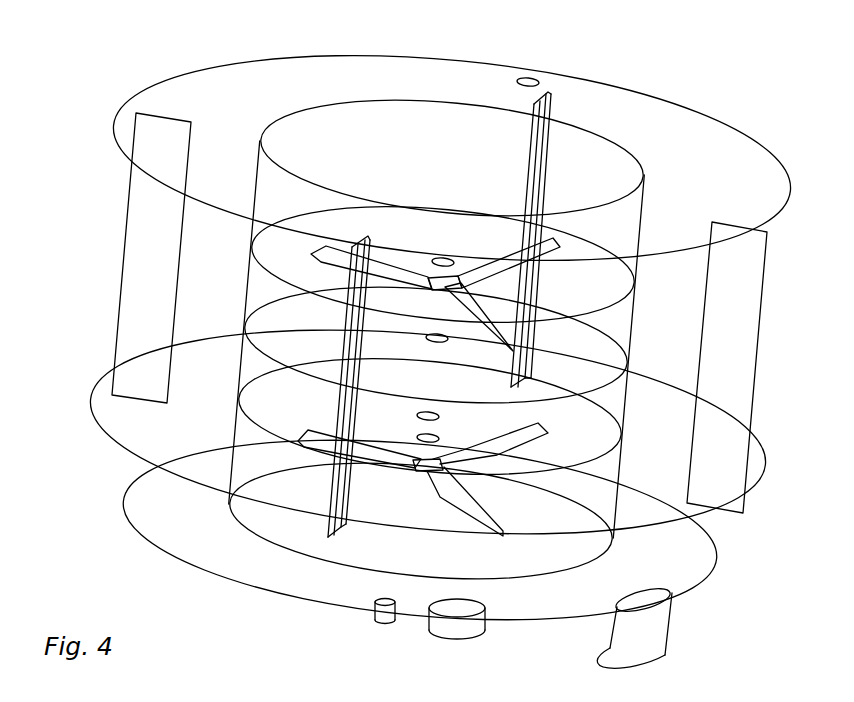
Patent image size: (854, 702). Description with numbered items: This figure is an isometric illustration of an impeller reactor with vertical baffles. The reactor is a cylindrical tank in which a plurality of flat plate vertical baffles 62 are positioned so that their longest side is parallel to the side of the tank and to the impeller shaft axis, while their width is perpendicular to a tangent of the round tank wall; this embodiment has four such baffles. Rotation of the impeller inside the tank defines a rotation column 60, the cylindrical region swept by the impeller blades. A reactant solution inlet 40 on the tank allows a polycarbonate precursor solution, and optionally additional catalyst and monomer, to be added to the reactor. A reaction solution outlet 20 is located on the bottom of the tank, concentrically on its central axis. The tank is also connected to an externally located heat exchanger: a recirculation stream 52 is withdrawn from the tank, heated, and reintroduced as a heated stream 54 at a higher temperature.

The reaction solution outlet 20 is at (385, 623).
The reactant solution inlet 40 is at (533, 75).
The recirculation stream 52 is at (463, 633).
The heated stream 54 is at (650, 643).
The rotation column 60 is at (644, 224).
The vertical baffles 62 is at (735, 358).